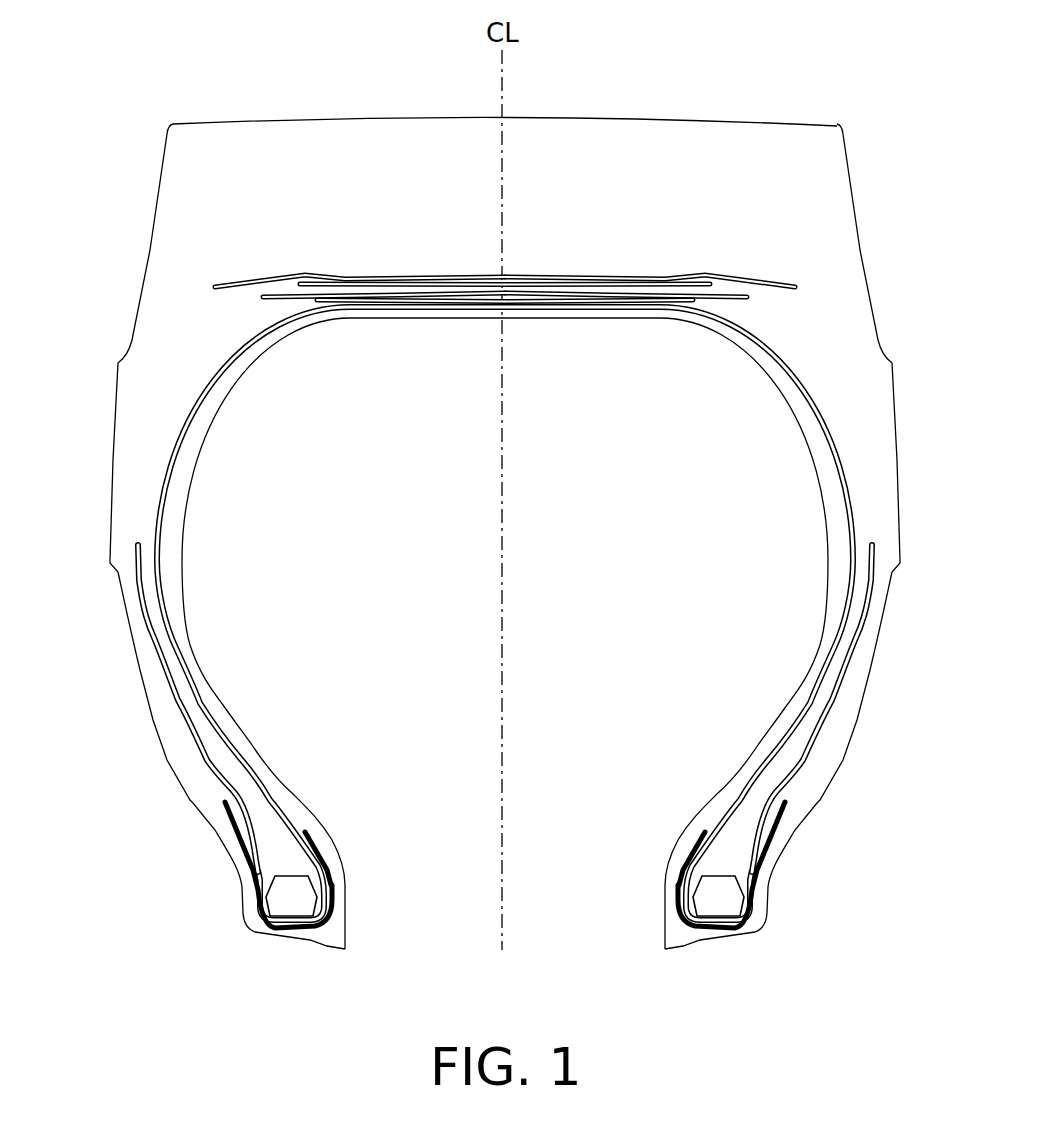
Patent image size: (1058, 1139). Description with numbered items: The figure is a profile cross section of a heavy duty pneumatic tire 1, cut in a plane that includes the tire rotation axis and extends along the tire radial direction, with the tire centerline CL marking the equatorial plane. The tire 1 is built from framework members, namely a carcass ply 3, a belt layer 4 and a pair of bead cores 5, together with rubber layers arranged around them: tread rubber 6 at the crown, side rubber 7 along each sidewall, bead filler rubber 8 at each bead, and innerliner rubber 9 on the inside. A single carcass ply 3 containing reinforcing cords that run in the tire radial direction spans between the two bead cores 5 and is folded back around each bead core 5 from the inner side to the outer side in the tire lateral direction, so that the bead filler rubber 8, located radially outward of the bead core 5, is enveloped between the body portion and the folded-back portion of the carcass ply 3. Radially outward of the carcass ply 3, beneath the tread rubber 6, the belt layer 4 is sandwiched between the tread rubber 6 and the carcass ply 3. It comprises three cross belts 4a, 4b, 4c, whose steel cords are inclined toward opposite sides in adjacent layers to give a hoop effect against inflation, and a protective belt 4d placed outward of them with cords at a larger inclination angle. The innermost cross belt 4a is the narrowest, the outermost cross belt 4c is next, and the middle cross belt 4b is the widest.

The pneumatic tire 1 is at (499, 483).
The carcass ply 3 is at (797, 410).
The belt layer 4 is at (567, 247).
The cross belt 4a is at (662, 292).
The cross belt 4b is at (700, 296).
The cross belt 4c is at (797, 293).
The protective belt 4d is at (738, 275).
The bead core 5 is at (303, 902).
The tread rubber 6 is at (707, 134).
The side rubber 7 is at (123, 458).
The bead filler rubber 8 is at (245, 785).
The innerliner rubber 9 is at (247, 372).